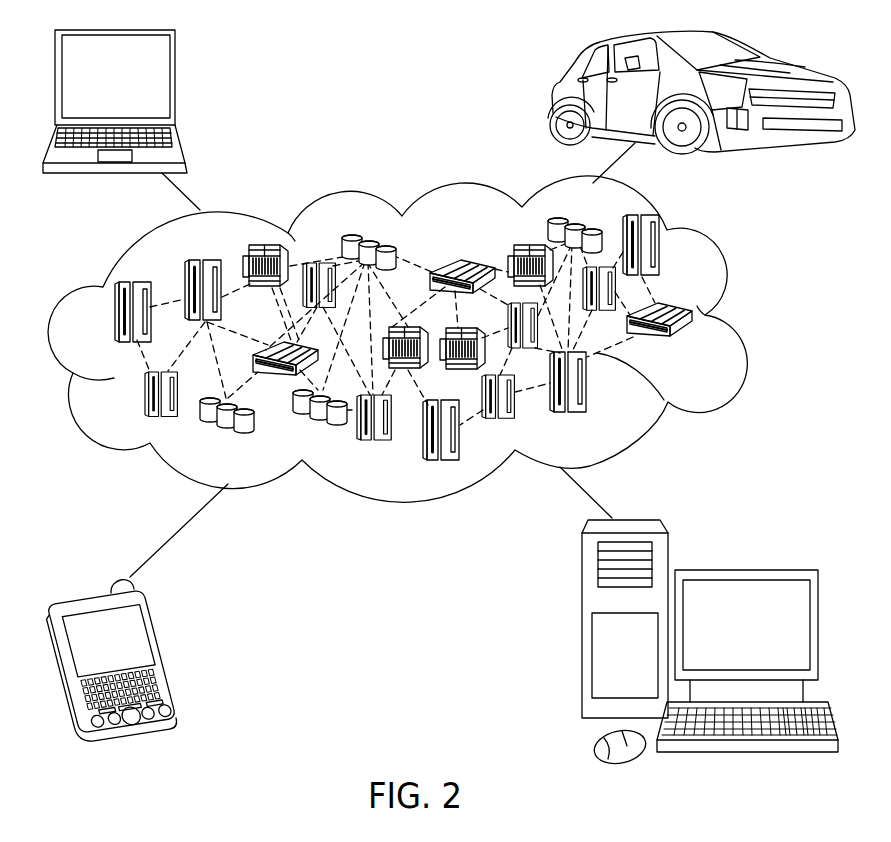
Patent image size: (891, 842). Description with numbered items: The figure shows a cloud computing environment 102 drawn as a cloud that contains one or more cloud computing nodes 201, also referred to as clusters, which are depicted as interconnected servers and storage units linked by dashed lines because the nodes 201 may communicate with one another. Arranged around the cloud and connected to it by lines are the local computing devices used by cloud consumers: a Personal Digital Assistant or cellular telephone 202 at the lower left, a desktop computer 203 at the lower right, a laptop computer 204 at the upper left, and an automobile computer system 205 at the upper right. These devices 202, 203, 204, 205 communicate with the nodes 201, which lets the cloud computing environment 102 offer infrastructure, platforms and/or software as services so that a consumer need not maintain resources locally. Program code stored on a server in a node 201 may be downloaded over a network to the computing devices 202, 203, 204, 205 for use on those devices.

The cloud computing environment 102 is at (745, 321).
The cloud computing nodes 201 is at (697, 345).
The Personal Digital Assistant (PDA) or cellular telephone 202 is at (170, 650).
The desktop computer 203 is at (742, 570).
The laptop computer 204 is at (175, 82).
The automobile computer system 205 is at (556, 92).